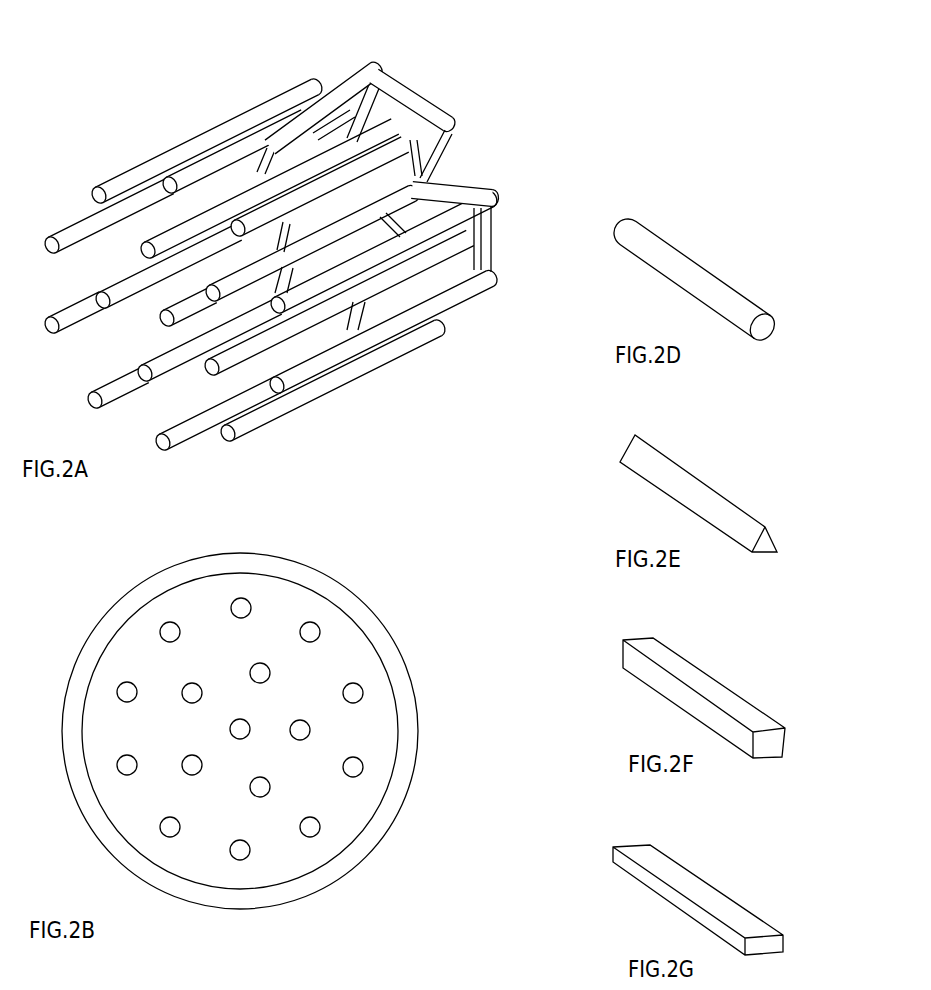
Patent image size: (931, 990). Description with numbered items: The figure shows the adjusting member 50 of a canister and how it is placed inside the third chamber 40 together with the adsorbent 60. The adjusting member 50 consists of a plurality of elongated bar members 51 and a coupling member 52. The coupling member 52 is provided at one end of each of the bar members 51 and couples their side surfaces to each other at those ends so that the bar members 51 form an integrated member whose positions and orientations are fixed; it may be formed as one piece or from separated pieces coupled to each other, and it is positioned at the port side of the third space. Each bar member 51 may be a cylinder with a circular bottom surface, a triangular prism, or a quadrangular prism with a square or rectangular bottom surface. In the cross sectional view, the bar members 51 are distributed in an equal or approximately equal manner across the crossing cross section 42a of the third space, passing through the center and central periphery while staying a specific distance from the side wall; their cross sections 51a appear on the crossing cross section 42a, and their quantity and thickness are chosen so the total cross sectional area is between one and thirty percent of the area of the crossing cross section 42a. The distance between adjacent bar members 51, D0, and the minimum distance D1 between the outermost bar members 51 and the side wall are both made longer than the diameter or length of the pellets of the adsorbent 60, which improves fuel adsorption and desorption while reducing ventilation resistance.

In FIG. 2A, the adjusting member 50 is at (441, 55).
In FIG. 2A, the bar member 51 is at (140, 120).
In FIG. 2B, the bar member 51 is at (366, 653).
In FIG. 2D, the bar member 51 is at (697, 283).
In FIG. 2E, the bar member 51 is at (715, 508).
In FIG. 2F, the bar member 51 is at (723, 698).
In FIG. 2G, the bar member 51 is at (717, 903).
In FIG. 2A, the coupling member 52 is at (476, 153).
In FIG. 2B, the third chamber 40 is at (392, 558).
In FIG. 2B, the adsorbent 60 is at (138, 660).
In FIG. 2B, the crossing cross section 42a is at (368, 737).
In FIG. 2B, the cross sections of the bar members 51a is at (310, 827).
In FIG. 2B, the distance between the side portion of each bar member and the side wall D1 is at (115, 681).
In FIG. 2B, the distance between adjacent bar members D0 is at (174, 697).